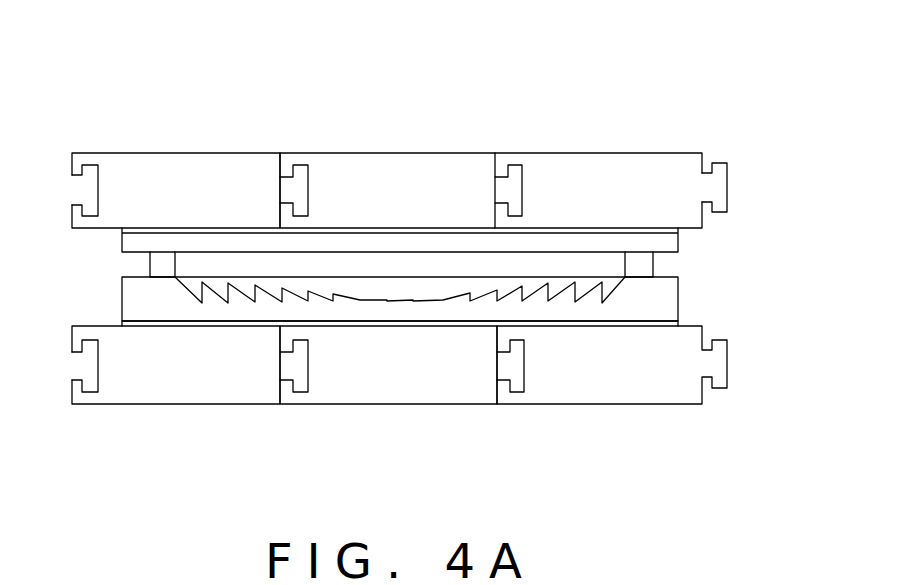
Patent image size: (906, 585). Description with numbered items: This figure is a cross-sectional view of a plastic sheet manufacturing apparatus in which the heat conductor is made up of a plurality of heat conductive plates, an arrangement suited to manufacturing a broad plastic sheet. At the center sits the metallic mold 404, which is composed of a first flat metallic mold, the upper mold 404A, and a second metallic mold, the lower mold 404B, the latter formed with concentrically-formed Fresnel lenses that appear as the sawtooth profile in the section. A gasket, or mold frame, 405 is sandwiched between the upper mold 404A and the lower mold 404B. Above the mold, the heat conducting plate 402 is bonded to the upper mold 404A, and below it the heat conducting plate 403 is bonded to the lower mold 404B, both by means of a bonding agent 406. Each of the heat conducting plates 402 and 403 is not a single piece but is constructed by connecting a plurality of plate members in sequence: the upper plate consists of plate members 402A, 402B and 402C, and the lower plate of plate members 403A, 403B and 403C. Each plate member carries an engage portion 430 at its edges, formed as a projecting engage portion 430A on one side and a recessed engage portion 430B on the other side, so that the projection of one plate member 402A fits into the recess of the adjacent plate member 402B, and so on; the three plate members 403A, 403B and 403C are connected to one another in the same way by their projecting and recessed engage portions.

The heat conducting plate 402 is at (613, 70).
The plate member 402A is at (245, 167).
The plate member 402B is at (400, 167).
The plate member 402C is at (573, 167).
The engage portion 430 is at (523, 190).
The projecting engage portion 430A is at (712, 185).
The recessed engage portion 430B is at (76, 172).
The metallic mold 404 is at (786, 230).
The first metallic mold 404A is at (662, 238).
The second metallic mold 404B is at (660, 305).
The gasket 405 is at (158, 263).
The bonding agent 406 is at (124, 321).
The heat conducting plate 403 is at (605, 458).
The plate member 403A is at (252, 382).
The plate member 403B is at (395, 385).
The plate member 403C is at (585, 385).